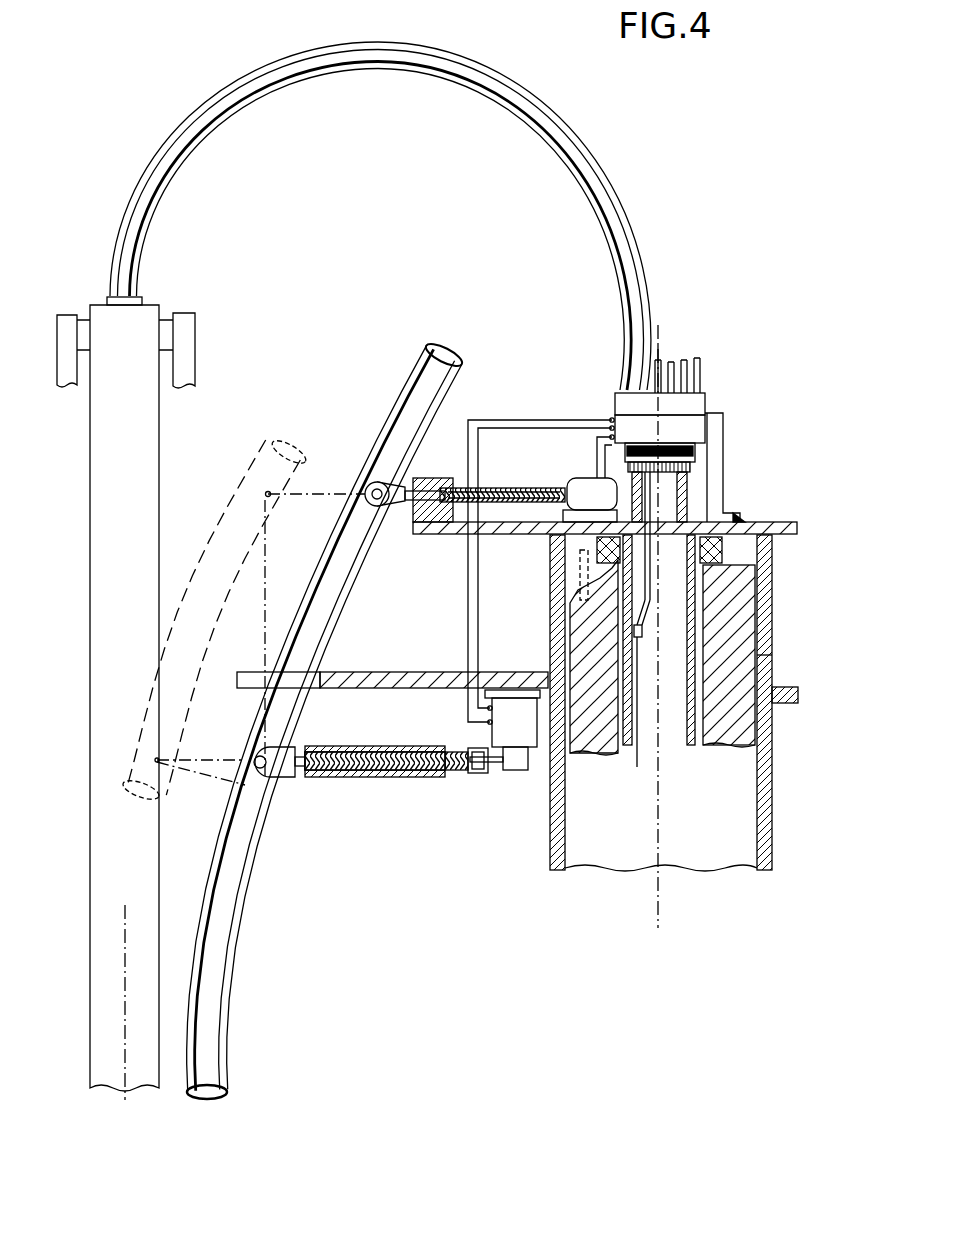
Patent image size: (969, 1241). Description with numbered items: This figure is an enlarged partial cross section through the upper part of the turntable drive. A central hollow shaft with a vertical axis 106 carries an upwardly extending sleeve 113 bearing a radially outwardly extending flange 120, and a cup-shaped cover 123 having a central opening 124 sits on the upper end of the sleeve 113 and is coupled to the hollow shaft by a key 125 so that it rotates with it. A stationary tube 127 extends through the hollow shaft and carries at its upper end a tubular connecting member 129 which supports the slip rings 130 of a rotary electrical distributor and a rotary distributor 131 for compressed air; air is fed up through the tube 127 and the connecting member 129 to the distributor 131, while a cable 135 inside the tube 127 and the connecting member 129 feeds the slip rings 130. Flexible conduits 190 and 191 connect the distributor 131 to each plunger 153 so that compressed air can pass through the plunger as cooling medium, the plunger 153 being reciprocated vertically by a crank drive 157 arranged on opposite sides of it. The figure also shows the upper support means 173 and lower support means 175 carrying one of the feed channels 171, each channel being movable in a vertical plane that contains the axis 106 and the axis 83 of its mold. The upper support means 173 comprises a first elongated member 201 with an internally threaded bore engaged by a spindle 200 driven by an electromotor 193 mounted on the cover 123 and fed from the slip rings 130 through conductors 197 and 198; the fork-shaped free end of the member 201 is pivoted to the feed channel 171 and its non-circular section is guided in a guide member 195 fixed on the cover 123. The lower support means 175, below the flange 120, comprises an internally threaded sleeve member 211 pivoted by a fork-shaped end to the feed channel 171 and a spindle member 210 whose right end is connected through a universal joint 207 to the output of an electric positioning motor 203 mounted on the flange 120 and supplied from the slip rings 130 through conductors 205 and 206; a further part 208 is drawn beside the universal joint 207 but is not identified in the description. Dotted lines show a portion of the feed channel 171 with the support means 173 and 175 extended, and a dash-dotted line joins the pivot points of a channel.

The mold axis 83 is at (124, 1030).
The vertical axis 106 is at (692, 918).
The sleeve 113 is at (549, 868).
The flange 120 is at (352, 672).
The cup-shaped cover 123 is at (552, 614).
The central opening 124 is at (694, 518).
The key 125 is at (570, 576).
The stationary tube 127 is at (694, 747).
The tubular connecting member 129 is at (688, 482).
The slip rings 130 is at (707, 430).
The rotary distributor for compressed air 131 is at (706, 406).
The cable 135 is at (637, 770).
The plunger 153 is at (85, 1003).
The crank drive 157 is at (196, 353).
The feed channel 171 is at (225, 520).
The upper support means 173 is at (376, 480).
The lower support means 175 is at (280, 769).
The flexible conduit 190 is at (332, 68).
The flexible conduit 191 is at (366, 43).
The electromotor 193 is at (610, 505).
The guide member 195 is at (404, 520).
The conductor 197 is at (594, 440).
The conductor 198 is at (600, 446).
The spindle 200 is at (565, 488).
The first elongated member 201 is at (506, 488).
The electric positioning motor 203 is at (532, 735).
The conductor 205 is at (468, 605).
The conductor 206 is at (478, 620).
The universal joint 207 is at (482, 782).
The bracket 208 is at (465, 778).
The spindle member 210 is at (462, 750).
The sleeve member 211 is at (396, 778).